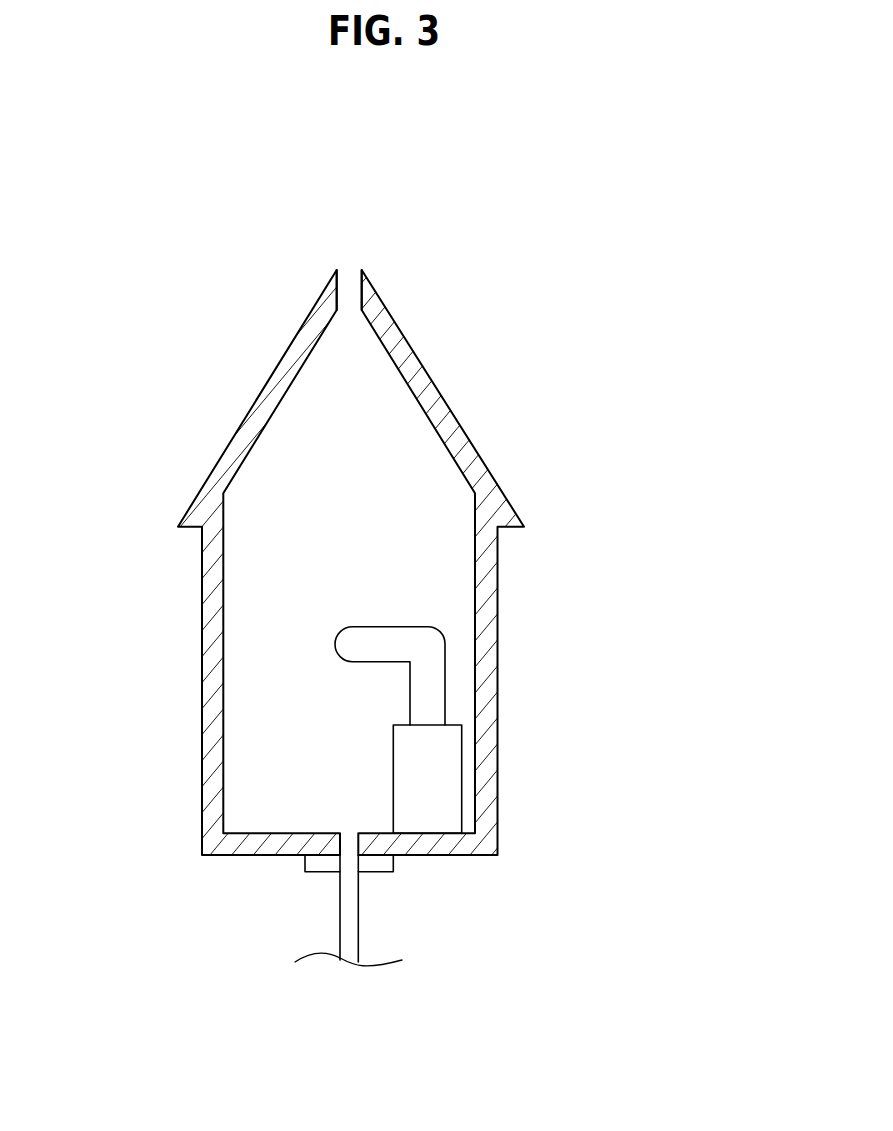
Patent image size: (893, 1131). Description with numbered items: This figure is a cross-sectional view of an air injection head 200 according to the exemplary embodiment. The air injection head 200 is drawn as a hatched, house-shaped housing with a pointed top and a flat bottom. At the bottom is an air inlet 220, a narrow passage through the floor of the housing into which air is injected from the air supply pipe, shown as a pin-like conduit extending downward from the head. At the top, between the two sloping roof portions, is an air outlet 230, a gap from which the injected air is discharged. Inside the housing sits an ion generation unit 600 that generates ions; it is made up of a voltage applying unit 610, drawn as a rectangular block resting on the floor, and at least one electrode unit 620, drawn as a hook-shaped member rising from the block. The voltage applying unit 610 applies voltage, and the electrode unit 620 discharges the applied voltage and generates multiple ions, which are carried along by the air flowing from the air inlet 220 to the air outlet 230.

The air injection head 200 is at (127, 338).
The air inlet 220 is at (335, 857).
The air outlet 230 is at (352, 287).
The ion generation unit 600 is at (541, 730).
The voltage applying unit 610 is at (448, 777).
The electrode unit 620 is at (432, 687).